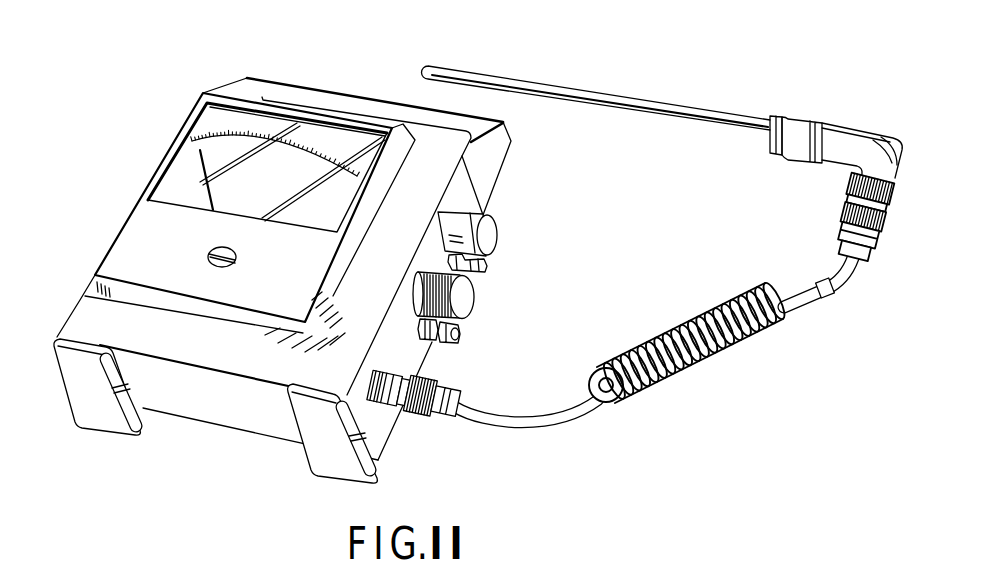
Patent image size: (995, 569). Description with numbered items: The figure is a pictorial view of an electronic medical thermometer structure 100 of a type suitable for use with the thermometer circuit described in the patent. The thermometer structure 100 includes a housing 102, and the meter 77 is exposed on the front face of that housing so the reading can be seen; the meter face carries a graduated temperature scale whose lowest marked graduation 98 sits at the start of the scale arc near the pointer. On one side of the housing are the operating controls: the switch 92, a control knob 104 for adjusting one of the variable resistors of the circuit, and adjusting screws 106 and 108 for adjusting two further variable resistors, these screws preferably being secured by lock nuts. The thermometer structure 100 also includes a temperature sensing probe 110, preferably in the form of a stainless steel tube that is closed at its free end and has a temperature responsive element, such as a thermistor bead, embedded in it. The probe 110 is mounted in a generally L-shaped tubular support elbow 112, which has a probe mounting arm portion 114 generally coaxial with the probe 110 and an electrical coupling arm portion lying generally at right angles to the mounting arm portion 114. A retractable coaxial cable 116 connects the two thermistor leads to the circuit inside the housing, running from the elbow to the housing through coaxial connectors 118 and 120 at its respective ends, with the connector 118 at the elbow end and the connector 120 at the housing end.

The meter 77 is at (249, 167).
The scale graduation 98 is at (197, 152).
The medical thermometer structure 100 is at (335, 91).
The housing 102 is at (98, 318).
The control knob 104 is at (470, 292).
The adjusting screw 106 is at (459, 341).
The adjusting screw 108 is at (489, 266).
The switch 92 is at (491, 227).
The temperature sensing probe 110 is at (550, 87).
The tubular support elbow 112 is at (866, 127).
The probe mounting arm portion 114 is at (837, 135).
The retractable coaxial cable 116 is at (708, 368).
The coaxial connector 118 is at (847, 188).
The coaxial connector 120 is at (417, 418).